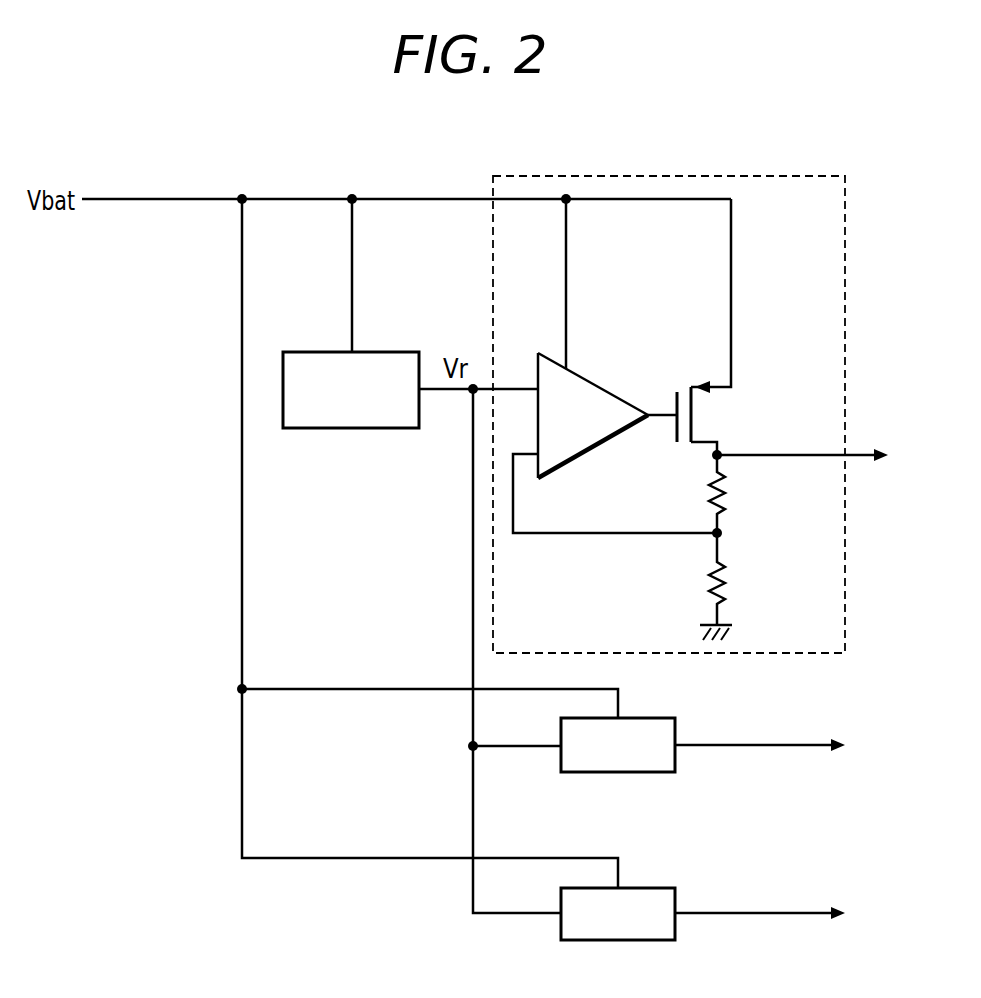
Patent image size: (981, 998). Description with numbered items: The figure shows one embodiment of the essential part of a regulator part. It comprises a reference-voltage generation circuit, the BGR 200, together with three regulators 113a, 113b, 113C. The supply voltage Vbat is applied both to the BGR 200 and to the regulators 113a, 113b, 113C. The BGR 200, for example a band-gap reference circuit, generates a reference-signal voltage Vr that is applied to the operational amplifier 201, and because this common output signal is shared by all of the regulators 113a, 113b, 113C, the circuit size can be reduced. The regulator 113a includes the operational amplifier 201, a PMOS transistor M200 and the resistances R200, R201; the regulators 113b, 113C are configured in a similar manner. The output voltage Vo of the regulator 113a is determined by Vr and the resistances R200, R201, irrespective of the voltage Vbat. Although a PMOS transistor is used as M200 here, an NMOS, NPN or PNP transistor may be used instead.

The reference-voltage generation circuit (BGR) 200 is at (372, 350).
The operational amplifier 201 is at (590, 378).
The regulator 113a is at (847, 197).
The regulator 113b is at (677, 730).
The regulator 113C is at (677, 900).
The PMOS transistor M200 is at (725, 327).
The resistance R200 is at (682, 494).
The resistance R201 is at (686, 586).